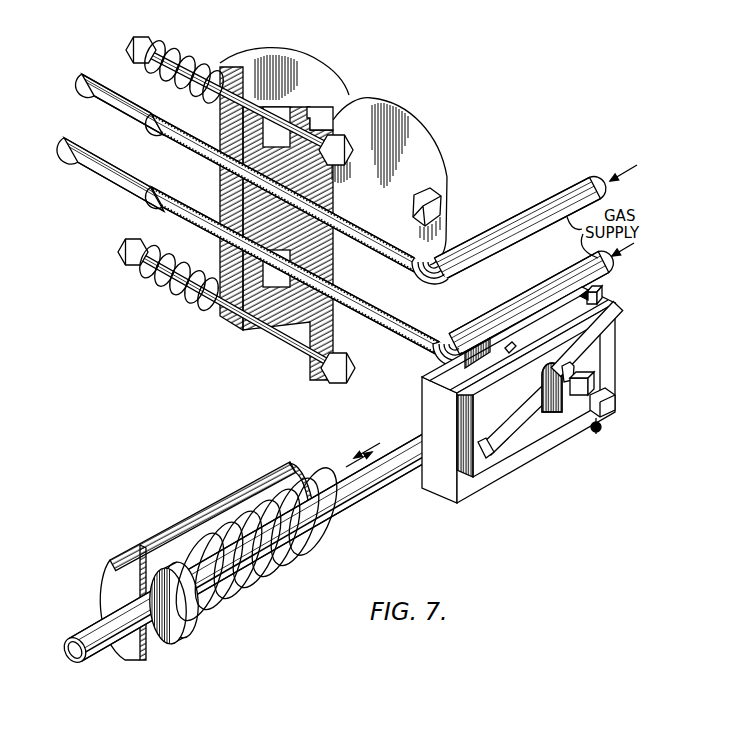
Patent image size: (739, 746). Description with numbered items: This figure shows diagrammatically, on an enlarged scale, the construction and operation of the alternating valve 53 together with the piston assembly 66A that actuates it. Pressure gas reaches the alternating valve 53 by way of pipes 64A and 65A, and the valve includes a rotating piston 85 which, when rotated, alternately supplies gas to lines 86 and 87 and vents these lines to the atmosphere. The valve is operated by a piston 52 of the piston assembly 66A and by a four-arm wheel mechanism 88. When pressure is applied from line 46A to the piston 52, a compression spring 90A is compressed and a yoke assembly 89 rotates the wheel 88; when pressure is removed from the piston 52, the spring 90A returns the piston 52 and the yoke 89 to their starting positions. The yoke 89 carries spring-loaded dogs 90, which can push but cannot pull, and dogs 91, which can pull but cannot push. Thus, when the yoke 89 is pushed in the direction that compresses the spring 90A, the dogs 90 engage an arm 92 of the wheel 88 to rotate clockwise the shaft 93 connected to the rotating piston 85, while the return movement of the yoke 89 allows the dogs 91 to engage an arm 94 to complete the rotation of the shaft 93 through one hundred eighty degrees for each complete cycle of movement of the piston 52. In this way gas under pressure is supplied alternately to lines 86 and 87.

The line 46A is at (64, 641).
The piston 52 is at (187, 637).
The alternating valve 53 is at (353, 82).
The pipe 64A is at (553, 206).
The pipe 65A is at (568, 269).
The piston assembly 66A is at (173, 522).
The rotating piston 85 is at (222, 182).
The line 86 is at (82, 86).
The line 87 is at (80, 165).
The 4-arm wheel mechanism 88 is at (543, 390).
The yoke assembly 89 is at (439, 406).
The spring-loaded dogs 90 is at (600, 292).
The compression spring 90A is at (318, 556).
The dogs 91 is at (592, 393).
The arm 92 is at (622, 316).
The shaft 93 is at (436, 312).
The arm 94 is at (603, 427).